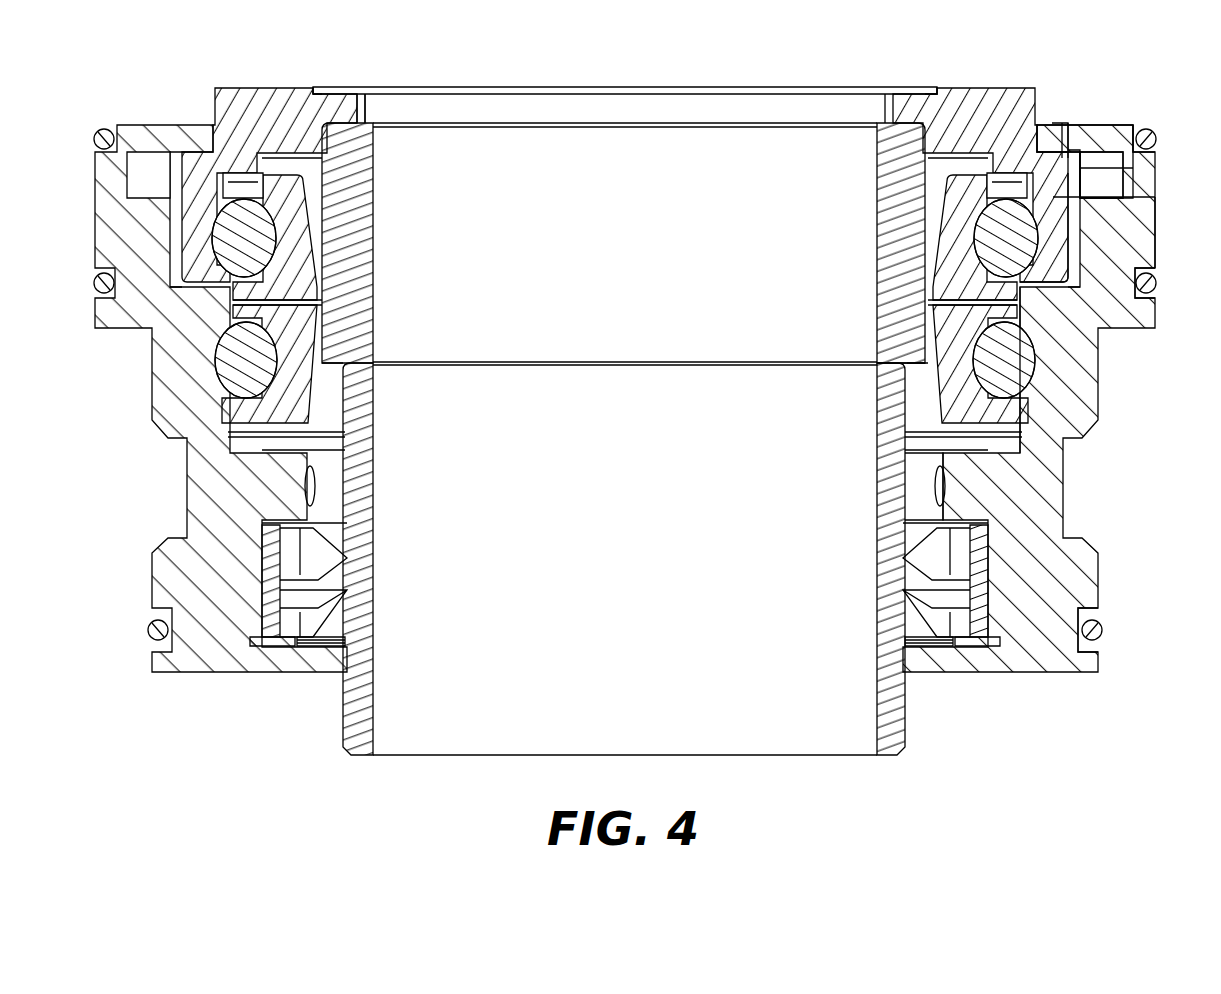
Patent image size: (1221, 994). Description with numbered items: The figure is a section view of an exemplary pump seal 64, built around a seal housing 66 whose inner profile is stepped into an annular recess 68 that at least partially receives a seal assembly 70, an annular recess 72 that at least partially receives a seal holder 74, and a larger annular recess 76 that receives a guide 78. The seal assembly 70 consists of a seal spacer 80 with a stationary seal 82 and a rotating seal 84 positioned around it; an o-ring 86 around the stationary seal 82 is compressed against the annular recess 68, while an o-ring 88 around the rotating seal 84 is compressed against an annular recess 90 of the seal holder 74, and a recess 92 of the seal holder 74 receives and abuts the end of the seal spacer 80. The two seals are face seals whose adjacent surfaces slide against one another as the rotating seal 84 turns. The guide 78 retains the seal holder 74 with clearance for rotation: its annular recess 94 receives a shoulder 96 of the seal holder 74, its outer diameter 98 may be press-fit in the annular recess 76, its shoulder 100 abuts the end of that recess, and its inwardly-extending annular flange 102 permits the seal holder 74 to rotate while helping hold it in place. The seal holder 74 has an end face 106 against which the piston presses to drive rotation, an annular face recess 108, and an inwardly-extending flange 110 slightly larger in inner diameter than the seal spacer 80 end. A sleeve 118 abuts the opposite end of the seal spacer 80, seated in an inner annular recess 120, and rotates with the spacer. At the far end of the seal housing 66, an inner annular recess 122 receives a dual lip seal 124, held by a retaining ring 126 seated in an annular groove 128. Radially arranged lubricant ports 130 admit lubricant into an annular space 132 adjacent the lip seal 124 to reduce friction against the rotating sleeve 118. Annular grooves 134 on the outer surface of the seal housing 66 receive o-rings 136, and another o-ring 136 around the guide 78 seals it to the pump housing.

The pump seal 64 is at (856, 78).
The seal housing 66 is at (1143, 195).
The annular recess 68 is at (1033, 370).
The seal assembly 70 is at (625, 385).
The annular recess 72 is at (1073, 245).
The seal holder 74 is at (985, 96).
The annular recess 76 is at (1125, 157).
The guide 78 is at (1103, 140).
The seal spacer 80 is at (878, 268).
The stationary seal 82 is at (958, 322).
The rotating seal 84 is at (990, 195).
The o-ring 86 is at (1027, 347).
The o-ring 88 is at (985, 225).
The annular recess 90 is at (1010, 172).
The recess 92 is at (938, 95).
The annular recess 94 is at (1115, 160).
The shoulder 96 is at (1064, 140).
The outer diameter 98 is at (1125, 168).
The shoulder 100 is at (1147, 205).
The annular flange 102 is at (1070, 135).
The end face 106 is at (240, 88).
The annular face recess 108 is at (330, 91).
The inwardly-extending flange 110 is at (345, 110).
The sleeve 118 is at (878, 430).
The inner annular recess 120 is at (892, 380).
The inner annular recess 122 is at (983, 574).
The lip seal 124 is at (922, 558).
The retaining ring 126 is at (965, 648).
The annular groove 128 is at (993, 648).
The lubricant ports 130 is at (316, 487).
The annular space 132 is at (912, 468).
The annular grooves 134 is at (1155, 300).
The o-rings 136 is at (1148, 135).